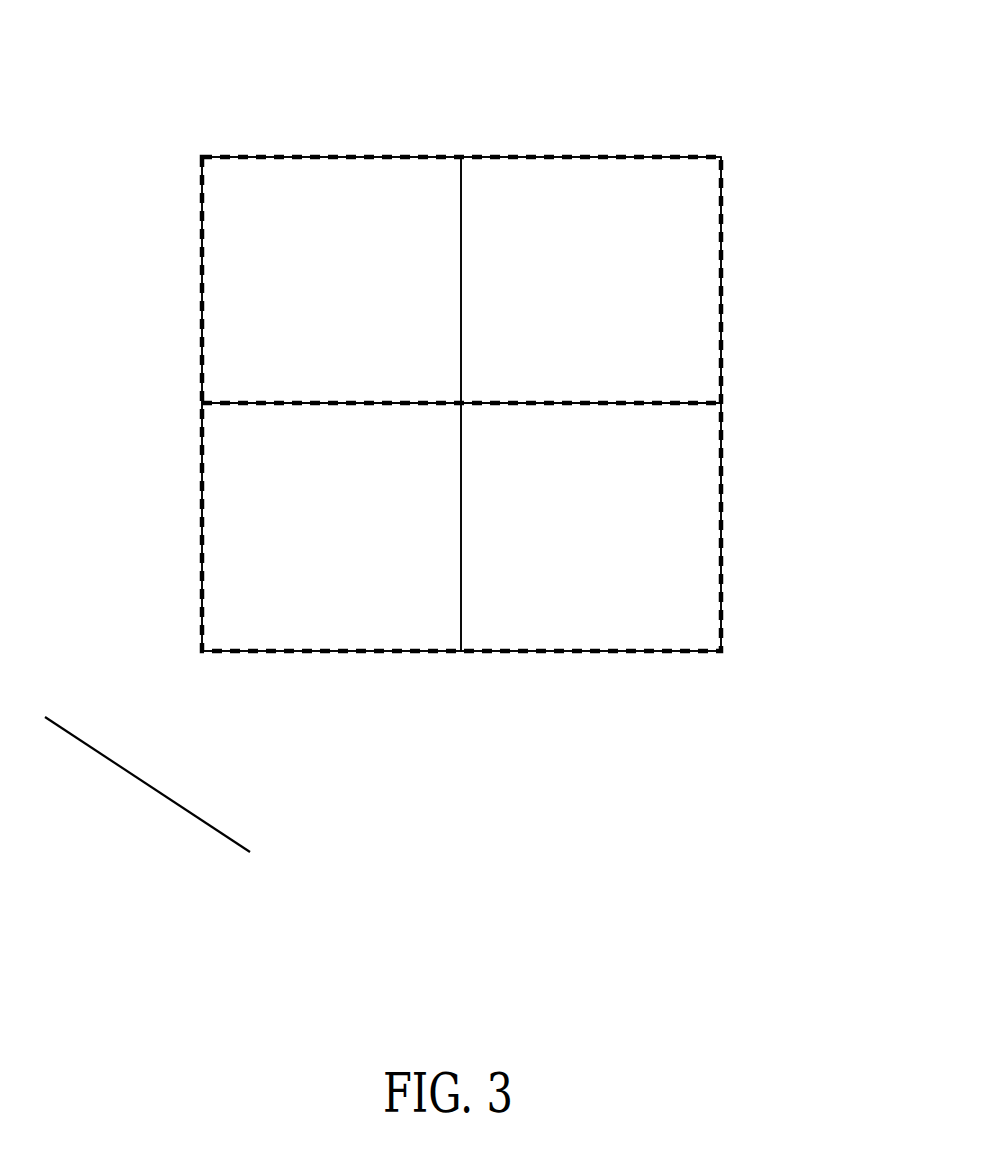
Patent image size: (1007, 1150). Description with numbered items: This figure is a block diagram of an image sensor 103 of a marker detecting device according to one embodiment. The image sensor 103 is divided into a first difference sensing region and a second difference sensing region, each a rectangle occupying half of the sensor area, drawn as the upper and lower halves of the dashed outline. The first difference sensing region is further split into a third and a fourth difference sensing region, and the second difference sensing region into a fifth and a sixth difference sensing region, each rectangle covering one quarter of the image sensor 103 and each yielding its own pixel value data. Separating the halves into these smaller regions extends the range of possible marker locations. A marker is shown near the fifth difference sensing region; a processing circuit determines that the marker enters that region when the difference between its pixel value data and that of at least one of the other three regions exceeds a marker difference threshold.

The image sensor 103 is at (746, 80).